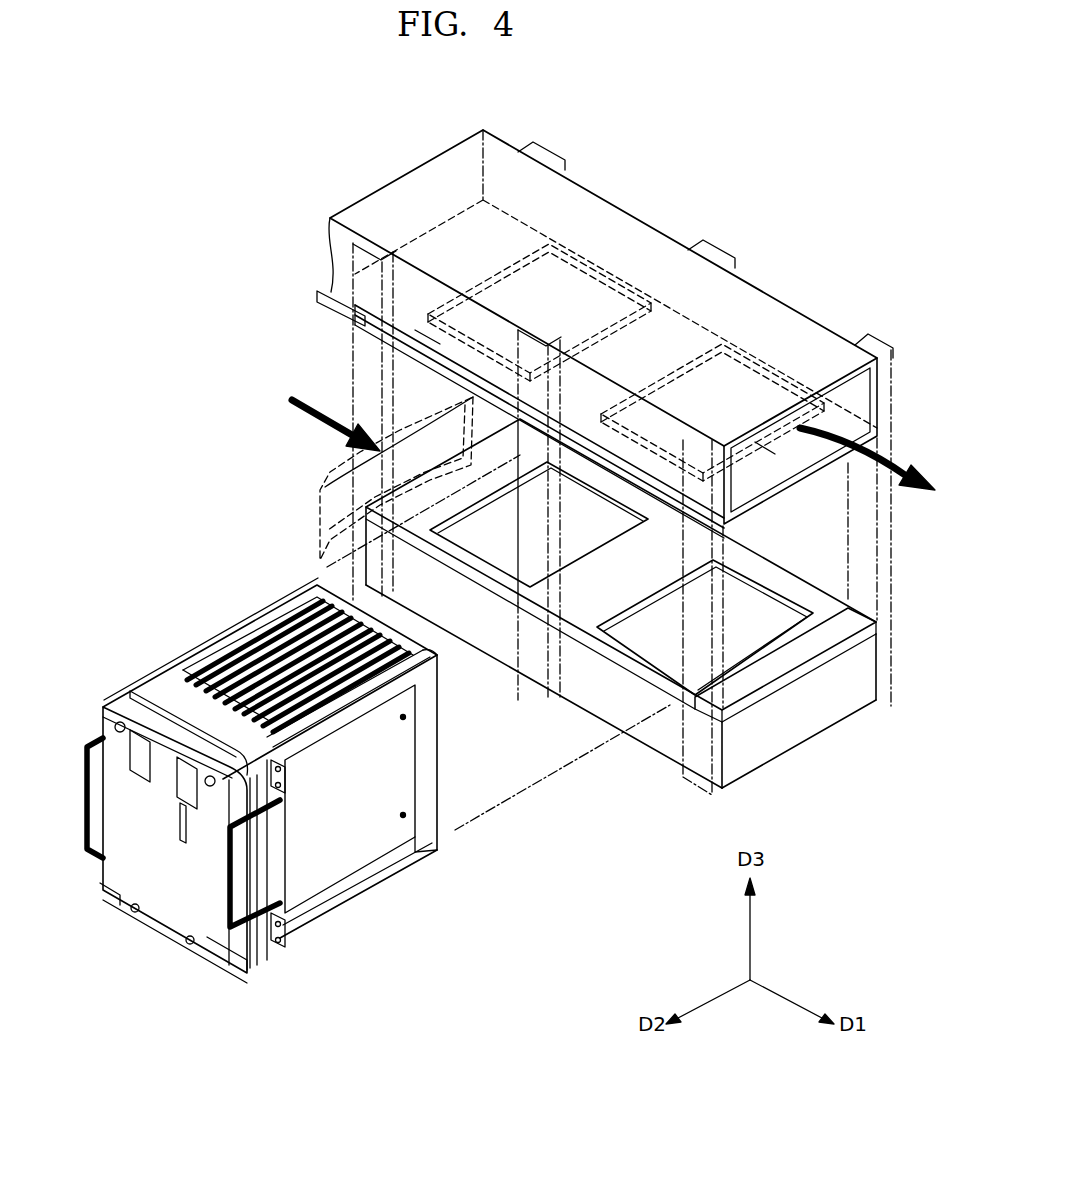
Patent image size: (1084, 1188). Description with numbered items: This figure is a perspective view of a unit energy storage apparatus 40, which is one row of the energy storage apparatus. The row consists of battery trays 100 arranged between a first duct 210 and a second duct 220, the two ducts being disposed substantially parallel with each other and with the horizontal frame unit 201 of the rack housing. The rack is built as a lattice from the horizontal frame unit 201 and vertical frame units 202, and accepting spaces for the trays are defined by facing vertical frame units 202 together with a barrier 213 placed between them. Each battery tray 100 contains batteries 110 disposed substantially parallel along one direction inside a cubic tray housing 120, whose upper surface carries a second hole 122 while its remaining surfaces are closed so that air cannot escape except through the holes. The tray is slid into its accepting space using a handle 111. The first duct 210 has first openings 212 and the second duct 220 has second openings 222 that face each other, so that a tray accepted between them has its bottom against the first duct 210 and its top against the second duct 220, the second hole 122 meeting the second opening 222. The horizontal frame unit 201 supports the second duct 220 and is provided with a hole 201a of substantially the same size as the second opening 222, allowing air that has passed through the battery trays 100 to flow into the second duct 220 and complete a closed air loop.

The unit energy storage apparatus 40 is at (780, 163).
The battery tray 100 is at (372, 845).
The batteries 110 is at (205, 660).
The handle 111 is at (100, 745).
The tray housing 120 is at (323, 868).
The second hole 122 is at (277, 600).
The horizontal frame unit 201 is at (433, 355).
The hole 201a is at (425, 335).
The vertical frame unit 202 is at (525, 158).
The first duct 210 is at (792, 738).
The first opening 212 is at (490, 565).
The barrier 213 is at (733, 528).
The second duct 220 is at (823, 332).
The second opening 222 is at (620, 285).